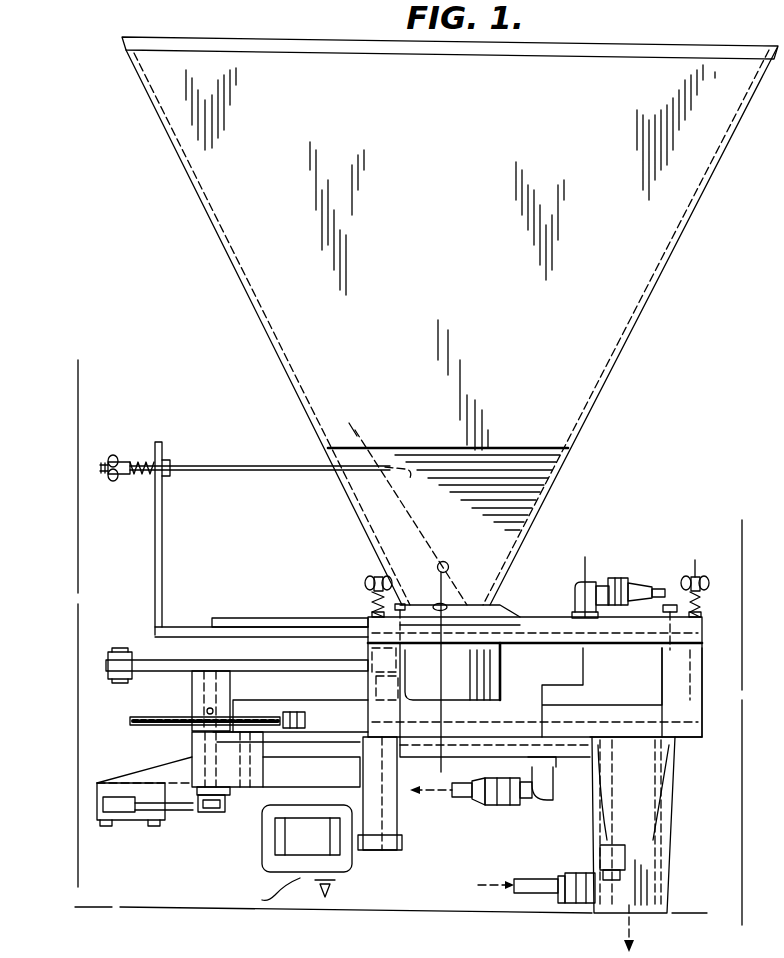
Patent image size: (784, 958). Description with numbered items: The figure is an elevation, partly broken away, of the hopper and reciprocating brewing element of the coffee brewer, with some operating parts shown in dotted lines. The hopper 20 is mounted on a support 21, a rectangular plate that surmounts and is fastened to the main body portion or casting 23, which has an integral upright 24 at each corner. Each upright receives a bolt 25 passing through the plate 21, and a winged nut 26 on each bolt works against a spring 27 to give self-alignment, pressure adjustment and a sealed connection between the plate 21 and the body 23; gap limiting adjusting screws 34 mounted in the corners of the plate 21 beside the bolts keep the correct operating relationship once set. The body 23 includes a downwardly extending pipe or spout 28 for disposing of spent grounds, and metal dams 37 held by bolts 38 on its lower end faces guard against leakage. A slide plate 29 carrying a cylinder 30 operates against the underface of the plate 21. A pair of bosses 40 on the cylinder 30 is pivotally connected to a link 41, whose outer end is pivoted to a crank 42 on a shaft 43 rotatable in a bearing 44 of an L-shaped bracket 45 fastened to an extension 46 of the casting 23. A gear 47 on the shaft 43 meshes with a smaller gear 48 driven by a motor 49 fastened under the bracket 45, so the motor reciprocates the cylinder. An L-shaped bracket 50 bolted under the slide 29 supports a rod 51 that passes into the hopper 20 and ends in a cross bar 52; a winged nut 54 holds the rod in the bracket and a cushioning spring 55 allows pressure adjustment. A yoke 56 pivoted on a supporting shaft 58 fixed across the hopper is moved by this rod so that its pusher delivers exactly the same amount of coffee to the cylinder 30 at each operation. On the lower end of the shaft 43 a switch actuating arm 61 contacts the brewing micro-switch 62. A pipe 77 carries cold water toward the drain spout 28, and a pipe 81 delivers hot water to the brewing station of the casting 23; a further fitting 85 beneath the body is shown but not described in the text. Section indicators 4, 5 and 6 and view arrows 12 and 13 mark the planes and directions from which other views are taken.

The section line 4- 4 is at (78, 372).
The section line 5- 5 is at (742, 542).
The section line 6- 6 is at (83, 907).
The direction arrow 12 is at (585, 568).
The vertical axis line 13 is at (441, 585).
The hopper 20 is at (221, 210).
The support plate 21 is at (528, 612).
The main body portion 23 is at (580, 720).
The upright 24 is at (393, 660).
The bolt 25 is at (373, 580).
The winged nut 26 is at (693, 575).
The spring 27 is at (702, 604).
The spout 28 is at (645, 855).
The slide plate 29 is at (284, 620).
The cylinder 30 is at (492, 672).
The gap limiting adjusting screw 34 is at (403, 603).
The metal dam 37 is at (702, 737).
The bolt 38 is at (362, 700).
The boss 40 is at (400, 688).
The link 41 is at (282, 668).
The crank 42 is at (158, 672).
The shaft 43 is at (206, 668).
The bearing 44 is at (190, 746).
The L-shaped bracket 45 is at (370, 851).
The extension 46 is at (390, 812).
The gear 47 is at (126, 723).
The smaller gear 48 is at (308, 720).
The motor 49 is at (293, 843).
The L-shaped bracket 50 is at (155, 553).
The rod 51 is at (238, 463).
The cross bar 52 is at (407, 481).
The winged nut 54 is at (116, 455).
The cushioning spring 55 is at (140, 474).
The yoke 56 is at (362, 421).
The supporting shaft 58 is at (449, 561).
The switch actuating arm 61 is at (213, 809).
The micro-switch 62 is at (136, 812).
The pipe 77 is at (530, 878).
The pipe 81 is at (645, 581).
The nozzle 85 is at (468, 797).